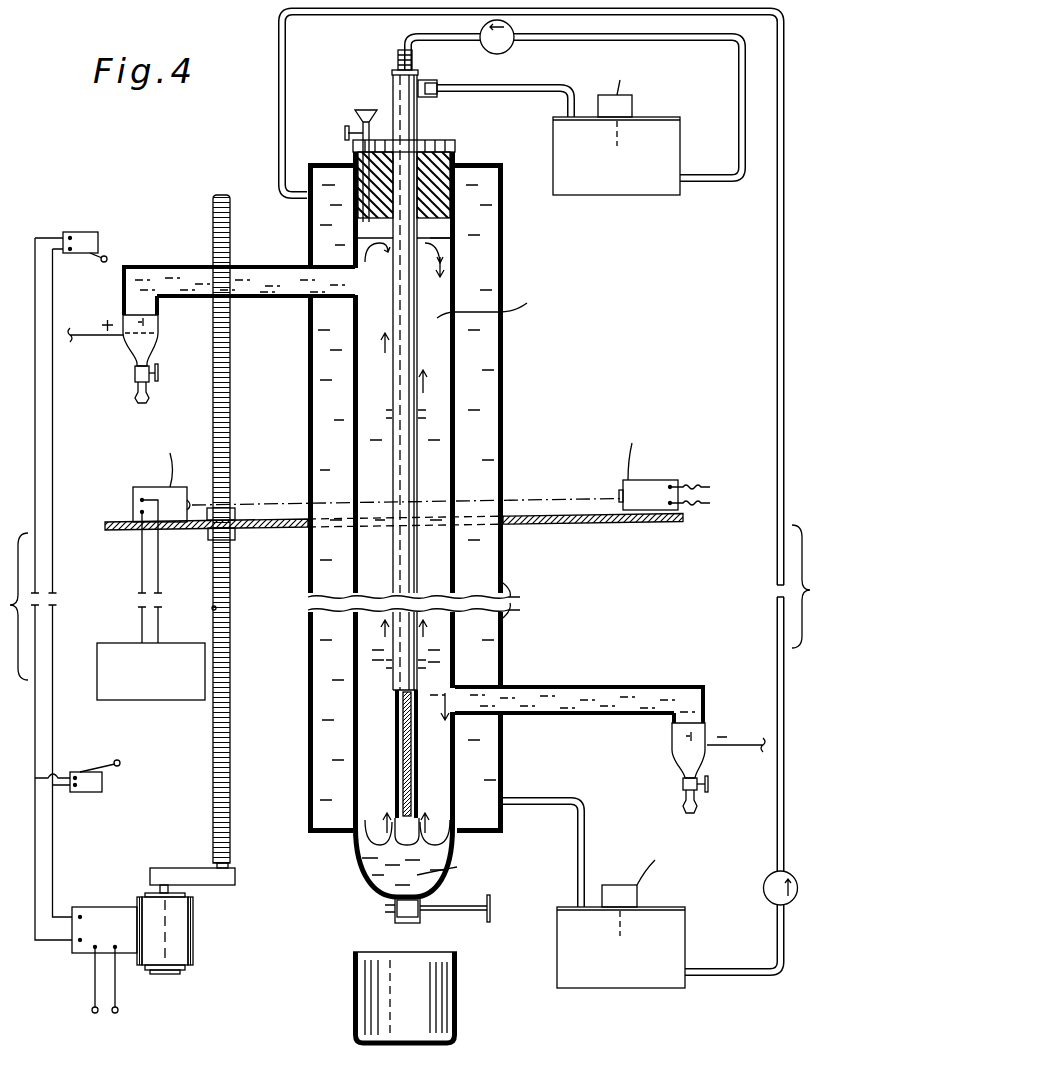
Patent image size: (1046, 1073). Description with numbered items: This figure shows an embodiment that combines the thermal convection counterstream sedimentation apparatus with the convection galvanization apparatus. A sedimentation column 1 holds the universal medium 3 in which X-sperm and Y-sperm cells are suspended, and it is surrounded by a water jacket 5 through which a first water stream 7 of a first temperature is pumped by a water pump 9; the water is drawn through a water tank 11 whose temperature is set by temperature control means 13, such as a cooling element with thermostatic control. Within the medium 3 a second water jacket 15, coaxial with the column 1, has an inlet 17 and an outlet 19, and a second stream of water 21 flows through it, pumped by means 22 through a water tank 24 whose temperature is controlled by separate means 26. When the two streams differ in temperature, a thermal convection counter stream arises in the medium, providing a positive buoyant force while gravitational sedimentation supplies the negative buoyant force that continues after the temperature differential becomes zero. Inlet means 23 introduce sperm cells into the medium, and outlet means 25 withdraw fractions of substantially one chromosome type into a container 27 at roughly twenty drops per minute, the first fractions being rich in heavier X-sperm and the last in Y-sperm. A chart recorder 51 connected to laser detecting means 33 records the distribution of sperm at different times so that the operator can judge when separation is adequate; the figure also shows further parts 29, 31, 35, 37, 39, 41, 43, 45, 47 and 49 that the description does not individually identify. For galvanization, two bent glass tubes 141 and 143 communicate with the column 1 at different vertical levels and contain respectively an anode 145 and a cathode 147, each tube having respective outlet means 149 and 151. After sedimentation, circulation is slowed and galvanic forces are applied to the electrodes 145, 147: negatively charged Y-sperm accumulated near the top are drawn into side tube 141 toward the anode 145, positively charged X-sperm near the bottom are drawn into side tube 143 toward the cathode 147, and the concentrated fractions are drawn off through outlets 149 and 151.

The sedimentation column 1 is at (455, 279).
The universal medium 3 is at (433, 360).
The water jacket 5 is at (506, 598).
The first water stream 7 is at (333, 452).
The water pump 9 is at (765, 889).
The water tank 11 is at (657, 973).
The temperature control means 13 is at (617, 885).
The second water jacket 15 is at (418, 765).
The inlet 17 is at (398, 58).
The outlet 19 is at (437, 97).
The second stream of water 21 is at (407, 737).
The pumping means 22 is at (508, 50).
The inlet means 23 is at (360, 118).
The water tank 24 is at (648, 190).
The outlet means 25 is at (395, 910).
The temperature control means 26 is at (632, 103).
The container 27 is at (457, 990).
The laser 29 is at (662, 480).
The laser beam 31 is at (553, 499).
The laser detecting means 33 is at (133, 495).
The platform 35 is at (563, 522).
The nut 37 is at (235, 508).
The screw rod 39 is at (230, 613).
The motor 41 is at (193, 947).
The coupling 43 is at (210, 880).
The motor control logic 45 is at (117, 907).
The limit switch 47 is at (102, 783).
The limit switch 49 is at (85, 232).
The chart recorder 51 is at (125, 630).
The bent glass tube 141 is at (275, 265).
The bent glass tube 143 is at (555, 685).
The anode 145 is at (150, 330).
The cathode 147 is at (700, 740).
The outlet means 149 is at (137, 390).
The outlet means 151 is at (688, 800).